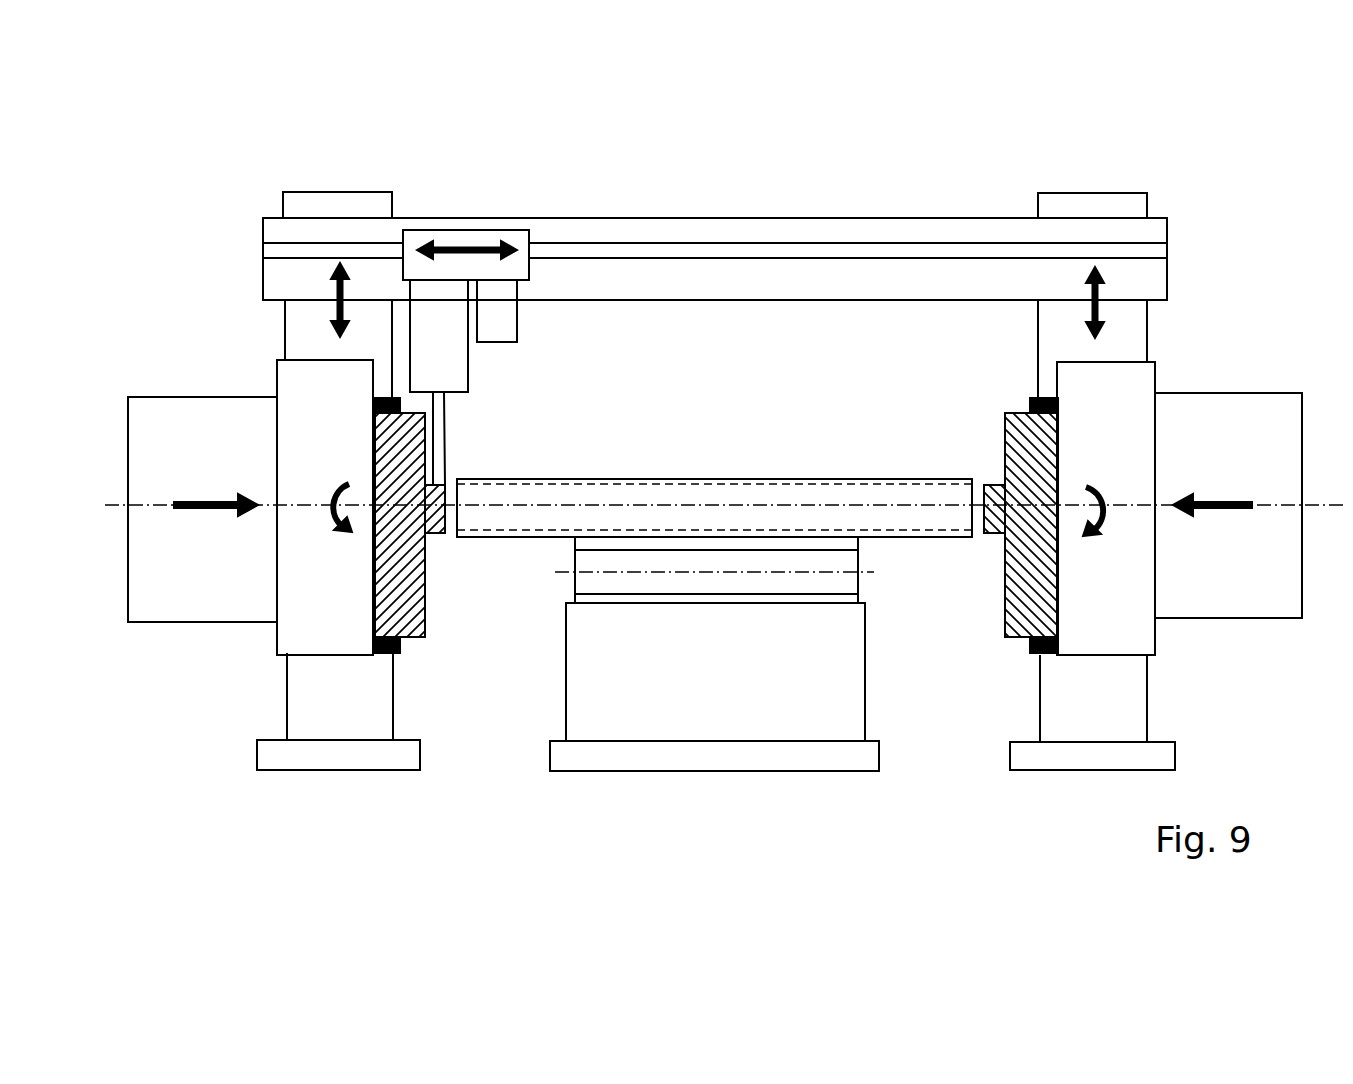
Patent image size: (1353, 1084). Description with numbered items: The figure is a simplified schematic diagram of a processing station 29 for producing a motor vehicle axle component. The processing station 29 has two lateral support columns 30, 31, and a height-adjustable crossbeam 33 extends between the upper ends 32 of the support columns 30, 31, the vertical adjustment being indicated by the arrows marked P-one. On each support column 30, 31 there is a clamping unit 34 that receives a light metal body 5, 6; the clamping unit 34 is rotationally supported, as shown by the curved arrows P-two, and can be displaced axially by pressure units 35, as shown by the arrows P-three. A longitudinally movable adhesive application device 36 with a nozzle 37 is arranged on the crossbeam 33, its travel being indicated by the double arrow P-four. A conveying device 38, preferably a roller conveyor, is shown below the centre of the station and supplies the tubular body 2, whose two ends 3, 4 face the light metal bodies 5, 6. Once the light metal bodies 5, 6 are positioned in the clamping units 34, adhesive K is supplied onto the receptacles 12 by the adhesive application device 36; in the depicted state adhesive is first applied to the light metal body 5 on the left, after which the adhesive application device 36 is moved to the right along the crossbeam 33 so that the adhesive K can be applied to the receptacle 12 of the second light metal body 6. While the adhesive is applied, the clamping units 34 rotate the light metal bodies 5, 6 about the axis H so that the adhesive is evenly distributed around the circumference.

The tubular body 2 is at (776, 478).
The first end of workpiece 3 is at (475, 480).
The second end of workpiece 4 is at (958, 480).
The light metal body 5 is at (425, 607).
The light metal body 6 is at (1007, 604).
The receptacle 12 is at (443, 535).
The processing station 29 is at (1274, 241).
The support column 30 is at (283, 340).
The support column 31 is at (1144, 343).
The upper end 32 is at (1145, 203).
The crossbeam 33 is at (793, 222).
The clamping unit 34 is at (278, 638).
The pressure unit 35 is at (162, 612).
The adhesive application device 36 is at (457, 229).
The nozzle 37 is at (468, 388).
The conveying device 38 is at (558, 640).
The adhesive K is at (446, 445).